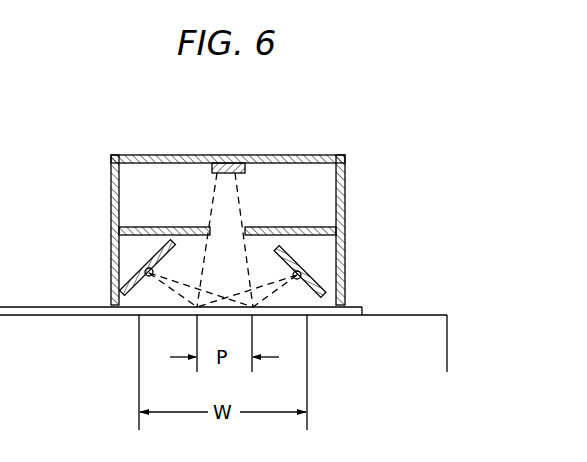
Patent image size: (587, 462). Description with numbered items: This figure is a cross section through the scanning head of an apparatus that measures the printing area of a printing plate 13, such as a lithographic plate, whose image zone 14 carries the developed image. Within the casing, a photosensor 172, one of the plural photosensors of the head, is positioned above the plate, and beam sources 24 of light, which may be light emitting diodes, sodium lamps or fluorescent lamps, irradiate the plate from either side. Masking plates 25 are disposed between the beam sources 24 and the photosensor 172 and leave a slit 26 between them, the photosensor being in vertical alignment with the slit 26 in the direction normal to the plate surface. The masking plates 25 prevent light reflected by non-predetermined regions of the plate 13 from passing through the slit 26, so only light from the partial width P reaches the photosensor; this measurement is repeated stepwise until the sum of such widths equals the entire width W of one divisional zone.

The image zone 14 is at (140, 155).
The photosensor 172 is at (228, 163).
The masking plates 25 is at (160, 227).
The slit 26 is at (238, 233).
The beam sources 24 is at (302, 277).
The printing plate 13 is at (352, 305).